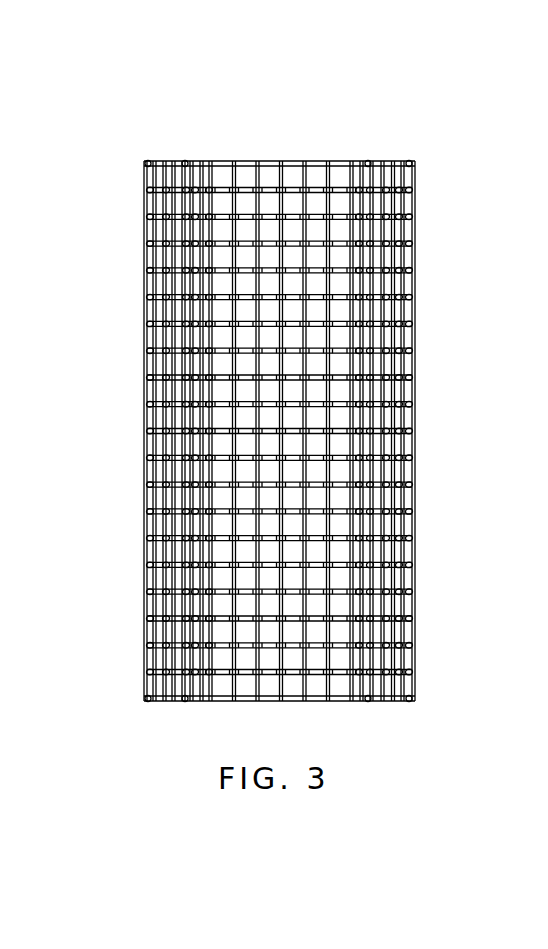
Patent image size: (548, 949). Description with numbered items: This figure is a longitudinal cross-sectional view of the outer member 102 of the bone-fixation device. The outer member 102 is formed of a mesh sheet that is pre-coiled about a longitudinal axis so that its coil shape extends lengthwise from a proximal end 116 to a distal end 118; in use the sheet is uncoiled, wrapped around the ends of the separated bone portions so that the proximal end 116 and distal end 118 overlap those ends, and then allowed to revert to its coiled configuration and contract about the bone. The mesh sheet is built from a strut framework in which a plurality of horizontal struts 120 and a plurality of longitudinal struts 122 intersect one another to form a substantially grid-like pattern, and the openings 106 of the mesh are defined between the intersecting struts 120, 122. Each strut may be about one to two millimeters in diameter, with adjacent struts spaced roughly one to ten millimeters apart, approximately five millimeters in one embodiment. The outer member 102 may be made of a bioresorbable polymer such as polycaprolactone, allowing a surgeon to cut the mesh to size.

The outer member 102 is at (219, 104).
The openings 106 is at (272, 312).
The proximal end 116 is at (313, 186).
The distal end 118 is at (178, 655).
The horizontal struts 120 is at (247, 508).
The longitudinal struts 122 is at (282, 603).